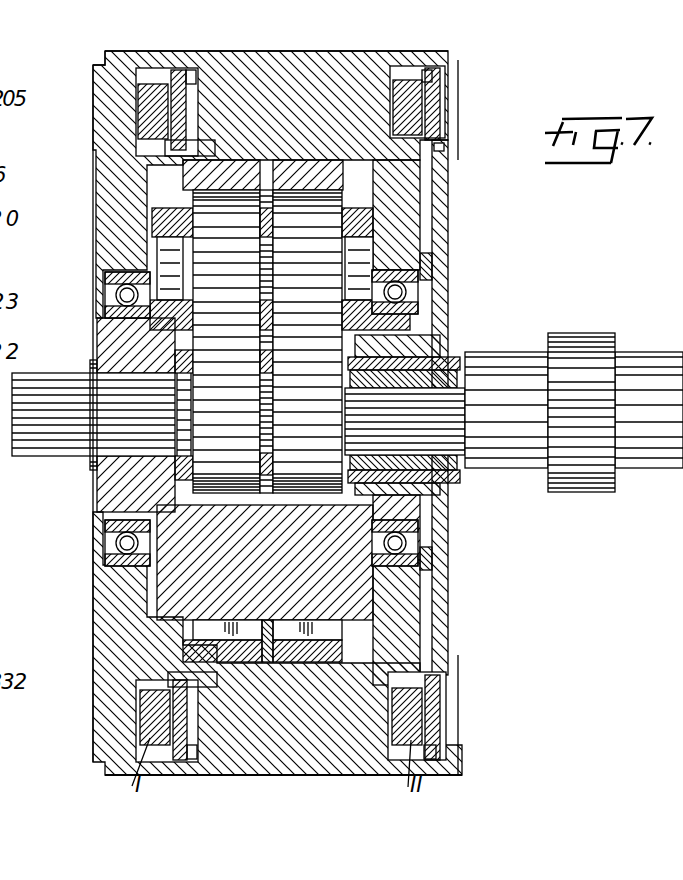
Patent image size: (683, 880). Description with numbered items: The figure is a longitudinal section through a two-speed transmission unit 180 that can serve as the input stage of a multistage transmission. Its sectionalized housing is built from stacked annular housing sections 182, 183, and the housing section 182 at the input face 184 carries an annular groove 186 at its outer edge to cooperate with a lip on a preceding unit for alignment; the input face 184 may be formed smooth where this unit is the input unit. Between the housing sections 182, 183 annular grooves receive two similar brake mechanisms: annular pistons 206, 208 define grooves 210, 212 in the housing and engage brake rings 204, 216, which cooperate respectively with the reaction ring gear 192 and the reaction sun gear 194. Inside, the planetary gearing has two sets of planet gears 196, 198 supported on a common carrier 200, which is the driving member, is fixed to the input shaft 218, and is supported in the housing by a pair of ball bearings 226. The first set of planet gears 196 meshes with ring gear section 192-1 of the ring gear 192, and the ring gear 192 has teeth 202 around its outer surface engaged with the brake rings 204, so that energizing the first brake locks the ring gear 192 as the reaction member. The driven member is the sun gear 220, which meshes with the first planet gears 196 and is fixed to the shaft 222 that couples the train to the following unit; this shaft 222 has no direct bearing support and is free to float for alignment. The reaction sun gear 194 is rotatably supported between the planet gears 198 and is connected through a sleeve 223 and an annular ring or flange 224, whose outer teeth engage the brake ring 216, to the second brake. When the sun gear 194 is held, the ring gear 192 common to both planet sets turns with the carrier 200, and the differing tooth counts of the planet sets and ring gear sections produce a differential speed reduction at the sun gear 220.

The two-speed transmission unit 180 is at (315, 21).
The housing section 182 is at (108, 776).
The housing section 183 is at (294, 774).
The input face 184 is at (93, 129).
The annular groove 186 is at (100, 62).
The ring gear 192 is at (198, 626).
The ring gear section 192-1 is at (340, 632).
The sun gear 194 is at (337, 494).
The planet gears 196 is at (203, 221).
The planet gears 198 is at (333, 230).
The carrier 200 is at (175, 577).
The teeth 202 is at (203, 147).
The brake rings 204 is at (191, 93).
The annular piston 206 is at (163, 737).
The annular piston 208 is at (408, 742).
The groove 210 is at (147, 62).
The groove 212 is at (397, 92).
The brake ring 216 is at (447, 106).
The input shaft 218 is at (34, 444).
The sun gear 220 is at (200, 462).
The shaft 222 is at (440, 414).
The sleeve 223 is at (444, 355).
The annular ring or flange 224 is at (446, 266).
The ball bearings 226 is at (118, 294).